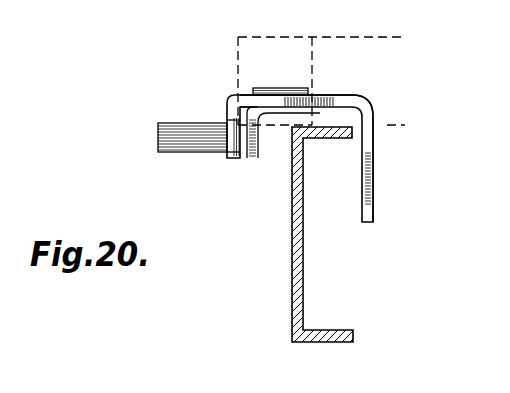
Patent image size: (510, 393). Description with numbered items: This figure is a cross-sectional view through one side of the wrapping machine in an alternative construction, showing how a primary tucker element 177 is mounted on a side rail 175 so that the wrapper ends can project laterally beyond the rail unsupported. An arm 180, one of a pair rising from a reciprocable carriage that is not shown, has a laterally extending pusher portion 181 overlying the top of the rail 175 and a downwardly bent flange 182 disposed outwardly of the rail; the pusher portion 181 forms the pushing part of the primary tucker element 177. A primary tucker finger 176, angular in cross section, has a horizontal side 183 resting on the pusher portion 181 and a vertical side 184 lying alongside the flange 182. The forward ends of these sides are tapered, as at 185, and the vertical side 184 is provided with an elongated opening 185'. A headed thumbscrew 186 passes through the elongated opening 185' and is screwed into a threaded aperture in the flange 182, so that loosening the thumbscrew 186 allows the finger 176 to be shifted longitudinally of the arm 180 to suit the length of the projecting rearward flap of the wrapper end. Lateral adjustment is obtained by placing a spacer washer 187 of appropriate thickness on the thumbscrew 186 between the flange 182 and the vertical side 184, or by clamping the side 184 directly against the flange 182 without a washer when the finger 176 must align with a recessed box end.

The side rail 175 is at (293, 260).
The primary tucker finger 176 is at (231, 88).
The primary tucker element 177 is at (388, 104).
The arm 180 is at (375, 170).
The pusher portion 181 is at (340, 97).
The flange 182 is at (262, 118).
The horizontal side 183 is at (256, 90).
The vertical side 184 is at (228, 155).
The tapered forward end 185 is at (280, 55).
The elongated opening 185' is at (194, 121).
The headed thumbscrew 186 is at (160, 138).
The spacer washer 187 is at (243, 159).